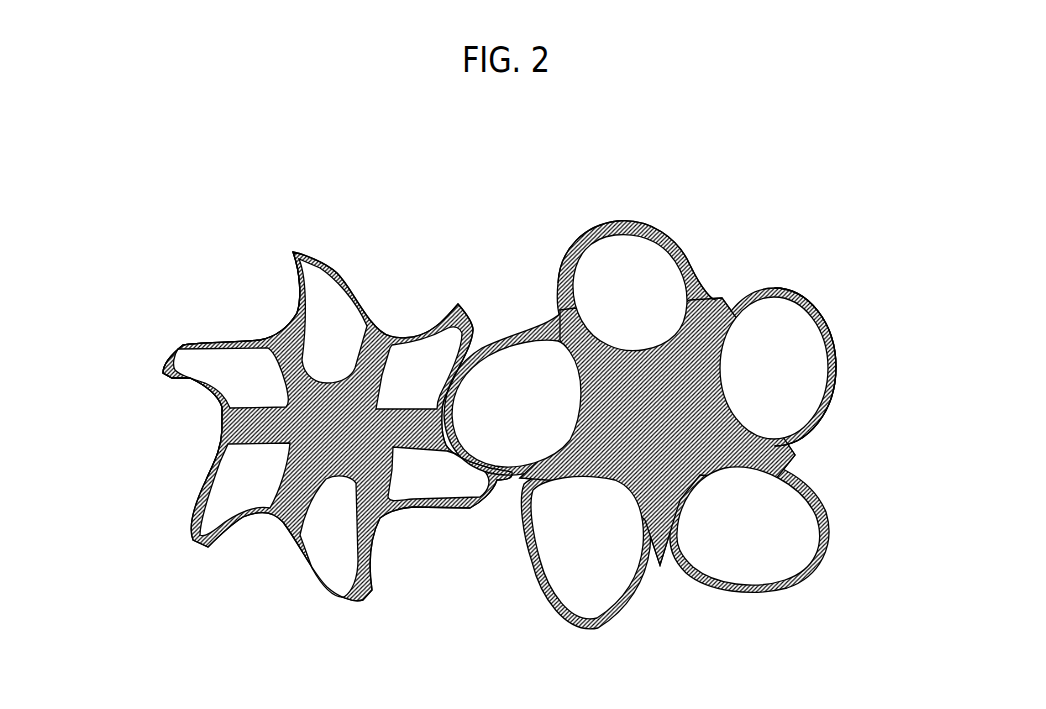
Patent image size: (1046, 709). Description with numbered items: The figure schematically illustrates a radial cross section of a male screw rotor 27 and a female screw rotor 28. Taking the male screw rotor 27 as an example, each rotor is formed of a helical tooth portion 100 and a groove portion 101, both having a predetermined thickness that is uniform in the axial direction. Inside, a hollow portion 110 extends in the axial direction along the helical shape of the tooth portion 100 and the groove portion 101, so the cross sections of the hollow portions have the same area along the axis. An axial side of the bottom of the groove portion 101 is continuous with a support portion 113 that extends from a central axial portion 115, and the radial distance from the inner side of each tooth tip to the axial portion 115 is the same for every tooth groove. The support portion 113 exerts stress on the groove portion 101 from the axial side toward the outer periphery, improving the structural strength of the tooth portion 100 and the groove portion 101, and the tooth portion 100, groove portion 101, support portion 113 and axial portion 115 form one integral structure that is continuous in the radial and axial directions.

The male screw rotor 27 is at (782, 156).
The female screw rotor 28 is at (206, 168).
The tooth portion 100 is at (168, 347).
The groove portion 101 is at (272, 331).
The hollow portion 110 is at (262, 489).
The support portion 113 is at (221, 444).
The axial portion 115 is at (333, 473).